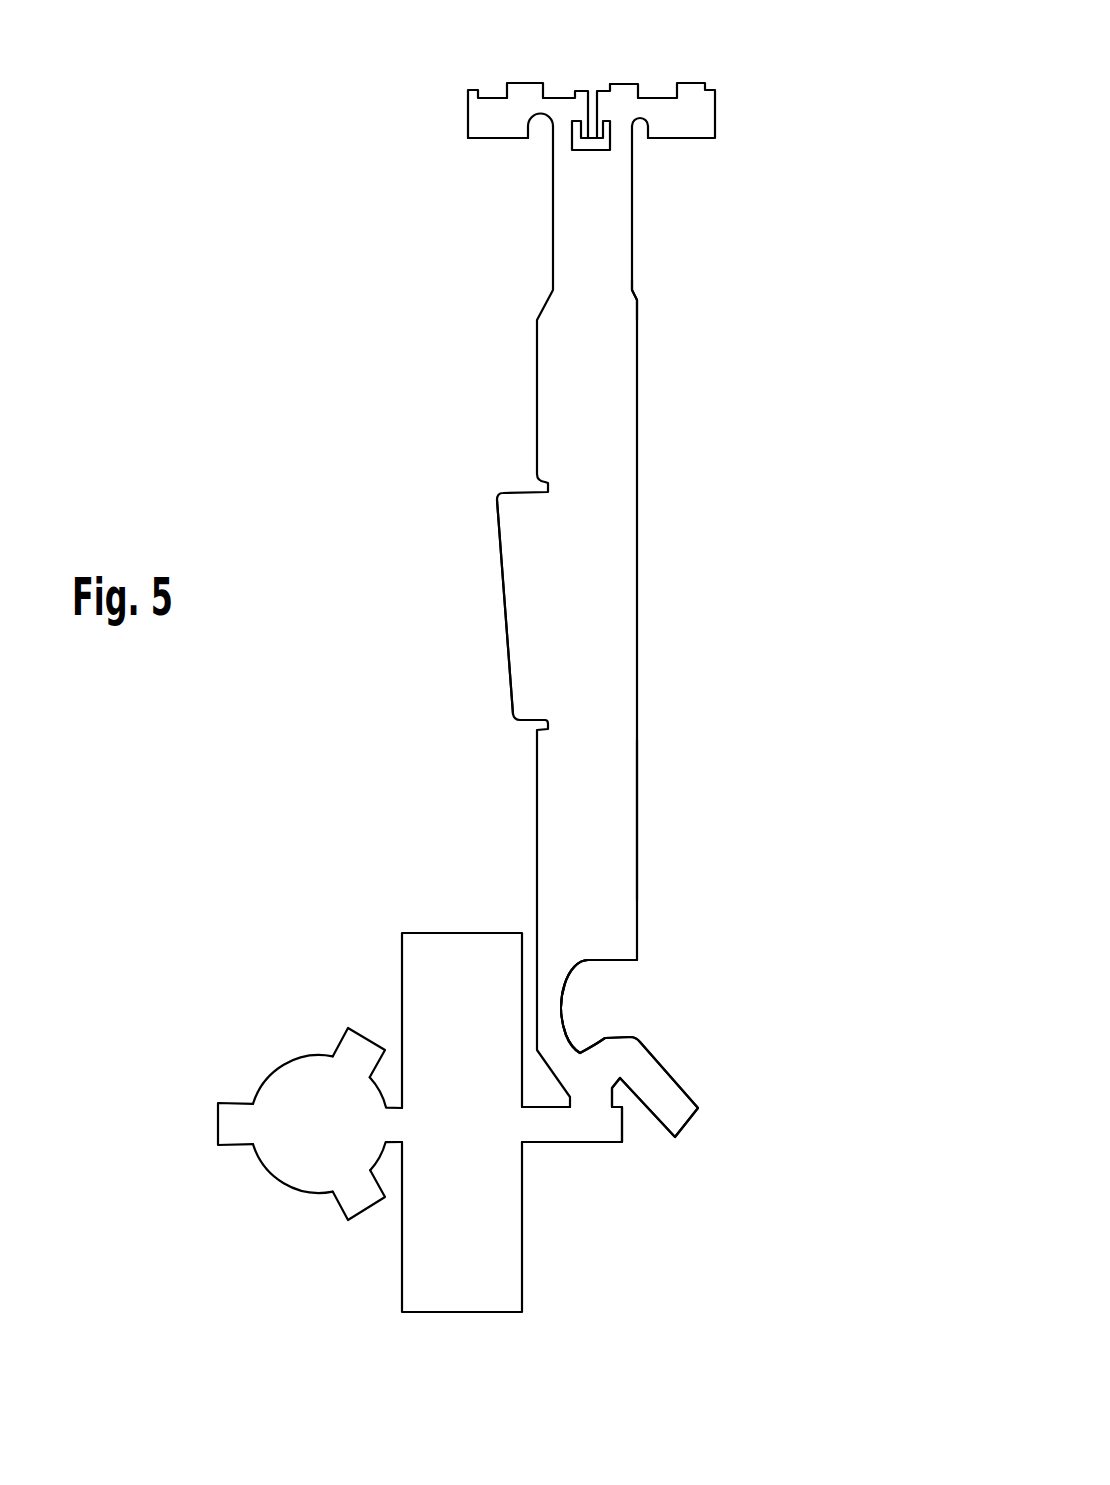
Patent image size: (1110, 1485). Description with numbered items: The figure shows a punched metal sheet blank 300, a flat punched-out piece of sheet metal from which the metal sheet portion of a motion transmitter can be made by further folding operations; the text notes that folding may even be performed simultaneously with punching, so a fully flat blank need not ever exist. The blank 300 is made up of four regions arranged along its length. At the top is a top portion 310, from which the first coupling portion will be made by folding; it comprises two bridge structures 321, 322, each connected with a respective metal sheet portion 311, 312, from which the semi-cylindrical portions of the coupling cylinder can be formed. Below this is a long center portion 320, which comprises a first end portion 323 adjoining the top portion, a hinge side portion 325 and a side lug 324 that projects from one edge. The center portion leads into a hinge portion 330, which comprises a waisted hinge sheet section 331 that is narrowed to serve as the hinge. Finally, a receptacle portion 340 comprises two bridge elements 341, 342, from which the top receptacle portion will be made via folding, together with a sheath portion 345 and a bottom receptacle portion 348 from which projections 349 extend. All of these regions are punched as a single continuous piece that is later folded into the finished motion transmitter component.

The punched metal sheet blank 300 is at (206, 381).
The top portion 310 is at (660, 81).
The metal sheet portion 311 is at (528, 92).
The metal sheet portion 312 is at (622, 90).
The center portion 320 is at (605, 628).
The bridge structure 321 is at (565, 133).
The bridge structure 322 is at (620, 135).
The first end portion 323 is at (632, 307).
The side lug 324 is at (530, 605).
The hinge side portion 325 is at (625, 808).
The hinge portion 330 is at (662, 994).
The waisted hinge sheet section 331 is at (548, 1002).
The receptacle portion 340 is at (681, 1120).
The bridge element 341 is at (677, 1110).
The bridge element 342 is at (570, 1127).
The sheath portion 345 is at (462, 1280).
The bottom receptacle portion 348 is at (310, 1122).
The projections 349 is at (357, 1197).